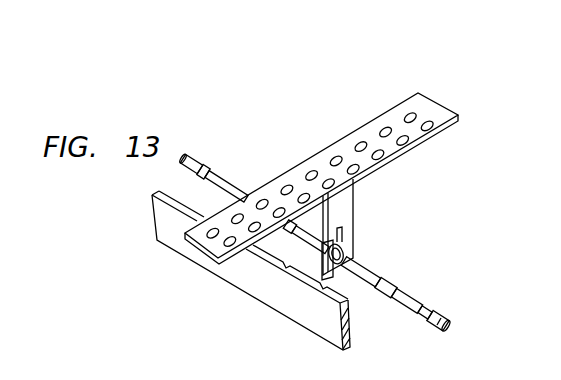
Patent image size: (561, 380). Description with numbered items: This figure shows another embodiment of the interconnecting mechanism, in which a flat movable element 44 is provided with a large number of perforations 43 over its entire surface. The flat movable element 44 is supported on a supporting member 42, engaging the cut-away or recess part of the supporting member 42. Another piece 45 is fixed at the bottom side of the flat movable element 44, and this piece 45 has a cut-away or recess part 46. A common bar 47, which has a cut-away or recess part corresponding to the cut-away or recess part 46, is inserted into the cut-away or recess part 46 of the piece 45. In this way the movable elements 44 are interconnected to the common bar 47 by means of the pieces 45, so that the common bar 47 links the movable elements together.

The supporting member 42 is at (283, 308).
The perforations 43 is at (310, 177).
The flat movable element 44 is at (346, 140).
The piece 45 is at (353, 201).
The cut-away or recess part 46 is at (343, 234).
The common bar 47 is at (373, 270).